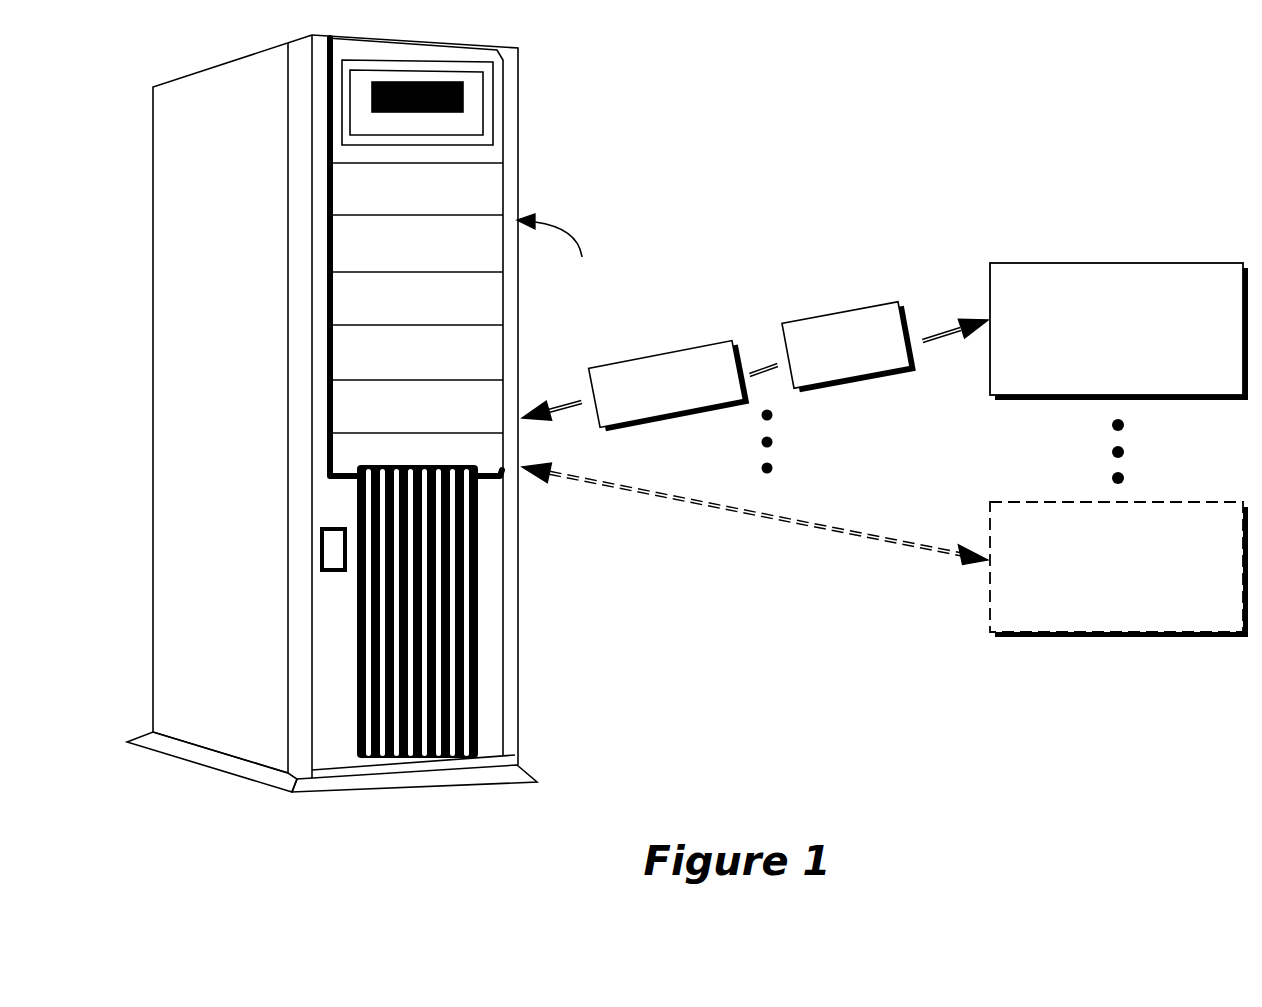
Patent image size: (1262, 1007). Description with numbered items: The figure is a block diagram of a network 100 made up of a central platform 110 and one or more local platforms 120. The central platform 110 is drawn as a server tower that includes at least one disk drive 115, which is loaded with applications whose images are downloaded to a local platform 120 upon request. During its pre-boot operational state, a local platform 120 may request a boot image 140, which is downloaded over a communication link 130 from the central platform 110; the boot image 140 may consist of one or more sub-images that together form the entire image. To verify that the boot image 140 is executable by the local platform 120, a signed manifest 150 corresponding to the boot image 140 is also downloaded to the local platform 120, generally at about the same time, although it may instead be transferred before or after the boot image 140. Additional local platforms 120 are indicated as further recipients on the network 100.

The network 100 is at (720, 216).
The central platform 110 is at (244, 511).
The disk drive 115 is at (564, 253).
The local platform 120 is at (1100, 265).
The communication link 130 is at (545, 398).
The boot image 140 is at (847, 380).
The signed manifest 150 is at (628, 430).